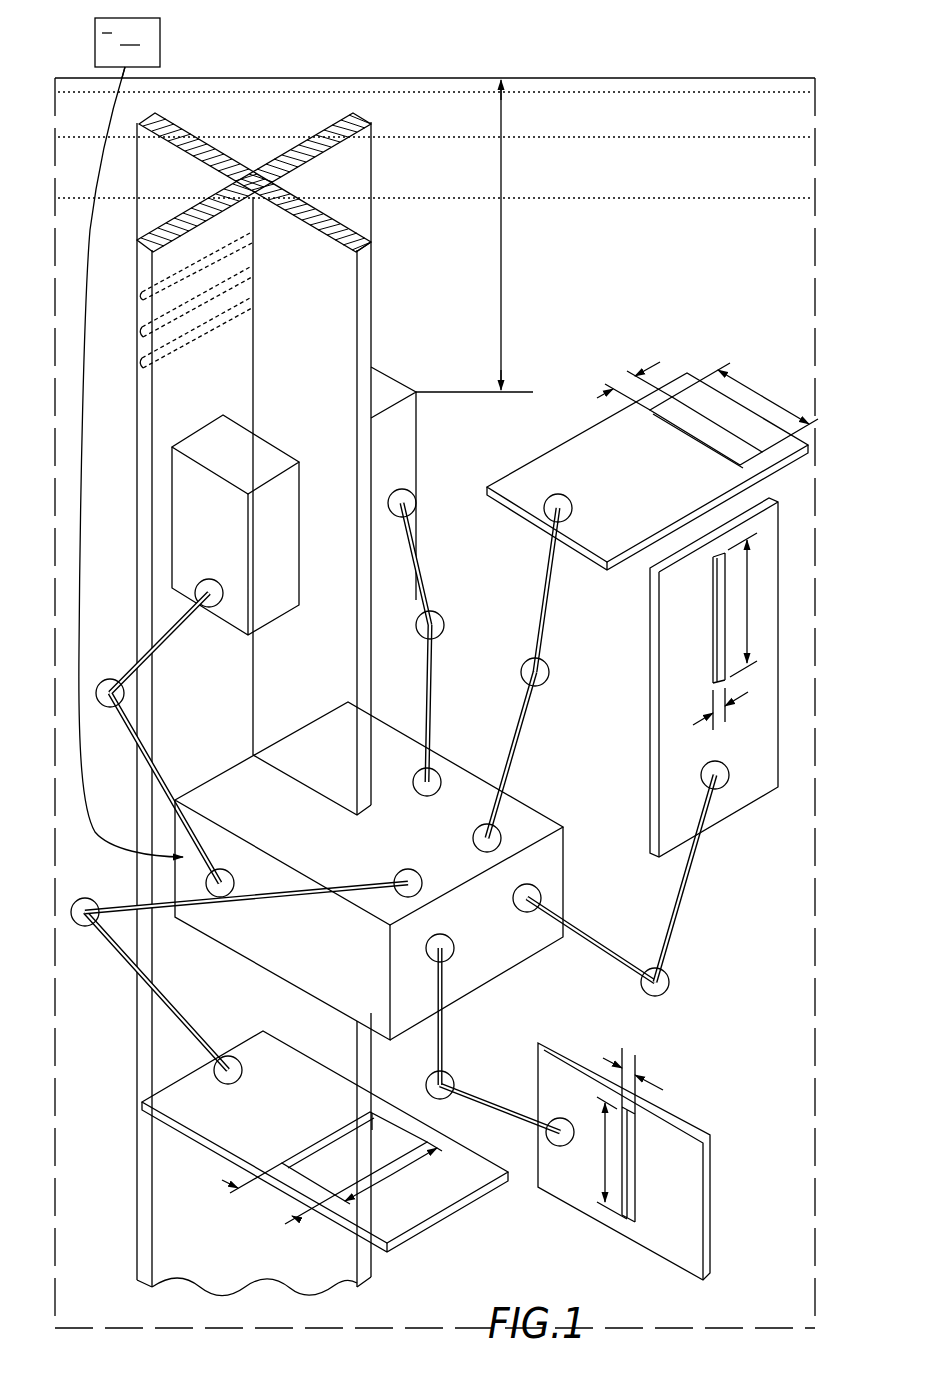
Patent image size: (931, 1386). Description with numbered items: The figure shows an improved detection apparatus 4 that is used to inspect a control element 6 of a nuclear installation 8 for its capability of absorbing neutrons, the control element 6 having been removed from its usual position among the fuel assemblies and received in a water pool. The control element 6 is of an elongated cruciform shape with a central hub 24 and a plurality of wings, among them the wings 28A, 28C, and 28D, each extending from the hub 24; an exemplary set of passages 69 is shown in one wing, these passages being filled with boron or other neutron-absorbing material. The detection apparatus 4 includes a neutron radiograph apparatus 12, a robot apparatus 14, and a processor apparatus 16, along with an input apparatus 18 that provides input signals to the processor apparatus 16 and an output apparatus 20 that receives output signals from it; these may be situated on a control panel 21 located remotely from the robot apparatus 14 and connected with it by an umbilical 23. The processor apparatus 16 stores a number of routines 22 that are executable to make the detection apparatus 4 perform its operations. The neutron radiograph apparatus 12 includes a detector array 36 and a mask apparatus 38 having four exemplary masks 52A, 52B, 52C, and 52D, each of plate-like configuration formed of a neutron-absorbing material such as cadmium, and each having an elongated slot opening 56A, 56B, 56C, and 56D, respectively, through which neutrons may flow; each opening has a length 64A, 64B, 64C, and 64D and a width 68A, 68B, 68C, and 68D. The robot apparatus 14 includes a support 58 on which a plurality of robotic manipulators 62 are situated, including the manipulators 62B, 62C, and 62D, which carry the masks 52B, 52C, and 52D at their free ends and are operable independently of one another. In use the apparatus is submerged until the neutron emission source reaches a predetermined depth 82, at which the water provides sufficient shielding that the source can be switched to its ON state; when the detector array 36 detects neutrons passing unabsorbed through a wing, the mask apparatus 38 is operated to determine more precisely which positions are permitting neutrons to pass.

The detection apparatus 4 is at (463, 688).
The control element 6 is at (271, 696).
The nuclear installation 8 is at (750, 77).
The neutron radiograph apparatus 12 is at (452, 443).
The robot apparatus 14 is at (369, 853).
The processor apparatus 16 is at (126, 36).
The input apparatus 18 is at (147, 53).
The output apparatus 20 is at (102, 33).
The control panel 21 is at (97, 74).
The umbilical 23 is at (114, 451).
The routines 22 is at (419, 431).
The central hub 24 is at (289, 177).
The wing 28A is at (352, 256).
The wing 28C is at (157, 117).
The wing 28D is at (375, 147).
The detector array 36 is at (232, 633).
The mask apparatus 38 is at (652, 441).
The mask 52A is at (652, 441).
The mask 52B is at (325, 1156).
The mask 52C is at (752, 677).
The mask 52D is at (656, 1160).
The opening 56A is at (687, 433).
The opening 56B is at (327, 1140).
The opening 56C is at (718, 594).
The opening 56D is at (633, 1157).
The support 58 is at (332, 982).
The manipulators 62 is at (523, 724).
The manipulator 62B is at (112, 947).
The manipulator 62C is at (690, 880).
The manipulator 62D is at (452, 1077).
The length 64A is at (749, 387).
The length 64B is at (380, 1181).
The length 64C is at (748, 572).
The length 64D is at (602, 1148).
The width 68A is at (606, 384).
The width 68B is at (248, 1197).
The width 68C is at (715, 712).
The width 68D is at (625, 1063).
The passages 69 is at (146, 296).
The predetermined depth 82 is at (503, 222).